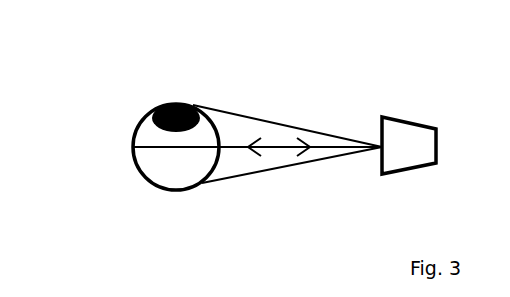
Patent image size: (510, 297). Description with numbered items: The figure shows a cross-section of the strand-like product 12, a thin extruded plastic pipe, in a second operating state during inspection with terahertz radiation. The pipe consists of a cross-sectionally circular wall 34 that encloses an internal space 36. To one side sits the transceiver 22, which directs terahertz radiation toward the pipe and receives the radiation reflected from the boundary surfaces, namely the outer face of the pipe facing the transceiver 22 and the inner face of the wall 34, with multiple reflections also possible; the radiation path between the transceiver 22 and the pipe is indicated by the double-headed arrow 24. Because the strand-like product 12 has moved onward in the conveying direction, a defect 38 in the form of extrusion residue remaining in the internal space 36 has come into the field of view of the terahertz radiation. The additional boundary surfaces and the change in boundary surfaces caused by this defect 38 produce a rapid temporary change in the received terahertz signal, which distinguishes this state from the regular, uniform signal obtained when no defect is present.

The strand-like product 12 is at (142, 83).
The defect 38 is at (183, 102).
The wall 34 is at (133, 158).
The internal space 36 is at (162, 172).
The distance 24 is at (280, 148).
The transceiver 22 is at (413, 137).